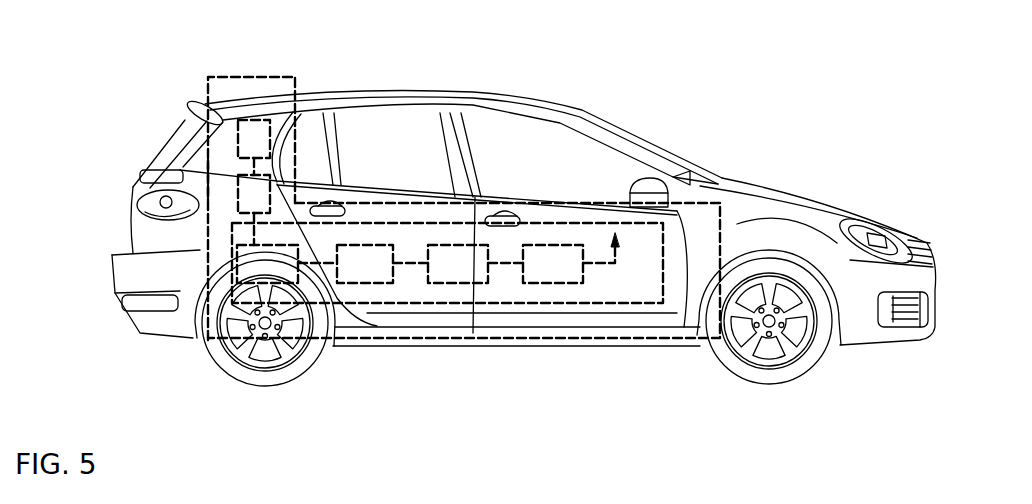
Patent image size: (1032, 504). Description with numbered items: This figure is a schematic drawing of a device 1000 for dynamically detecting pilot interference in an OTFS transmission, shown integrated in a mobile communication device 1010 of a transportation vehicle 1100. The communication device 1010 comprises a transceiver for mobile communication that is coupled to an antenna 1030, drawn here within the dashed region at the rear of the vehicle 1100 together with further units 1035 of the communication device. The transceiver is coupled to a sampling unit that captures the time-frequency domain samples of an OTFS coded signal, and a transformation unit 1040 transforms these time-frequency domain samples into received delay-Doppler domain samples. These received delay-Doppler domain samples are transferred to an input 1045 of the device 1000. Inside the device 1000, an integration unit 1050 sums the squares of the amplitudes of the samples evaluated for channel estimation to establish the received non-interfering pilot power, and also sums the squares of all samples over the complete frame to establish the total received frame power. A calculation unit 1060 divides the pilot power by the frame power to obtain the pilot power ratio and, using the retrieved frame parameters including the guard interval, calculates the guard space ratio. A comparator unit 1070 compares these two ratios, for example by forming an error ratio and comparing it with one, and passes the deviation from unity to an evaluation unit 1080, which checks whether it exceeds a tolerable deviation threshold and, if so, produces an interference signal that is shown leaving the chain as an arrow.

The device 1000 is at (418, 303).
The mobile communication device 1010 is at (415, 203).
The antenna 1030 is at (253, 90).
The sensor units 1035 is at (238, 140).
The transformation unit 1040 is at (222, 184).
The input 1045 is at (253, 223).
The integration unit 1050 is at (267, 283).
The calculation unit 1060 is at (365, 283).
The comparator unit 1070 is at (458, 283).
The evaluation unit 1080 is at (553, 283).
The transportation vehicle 1100 is at (772, 180).